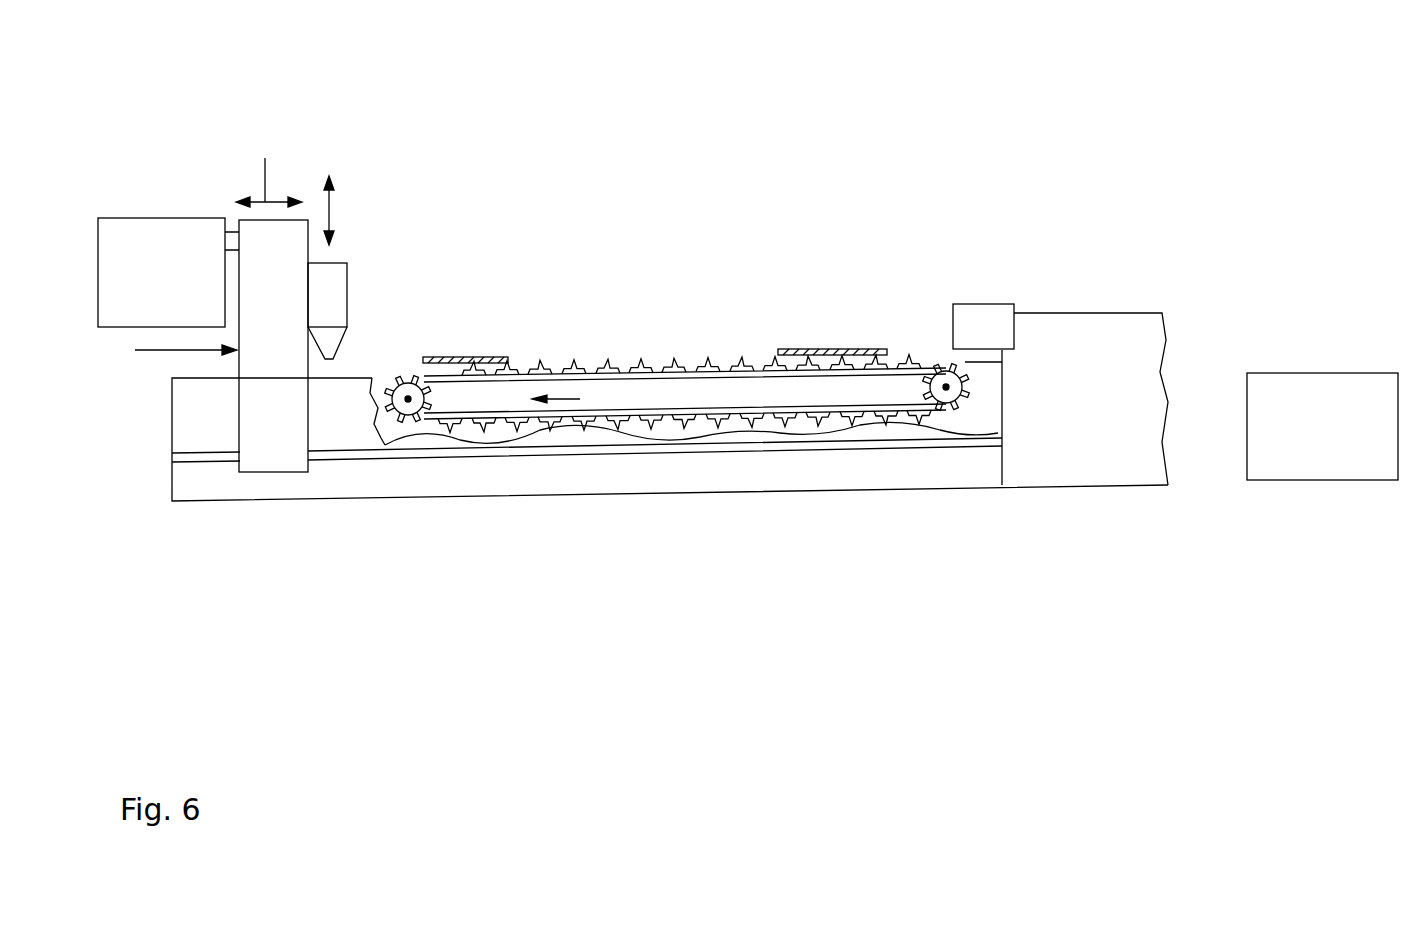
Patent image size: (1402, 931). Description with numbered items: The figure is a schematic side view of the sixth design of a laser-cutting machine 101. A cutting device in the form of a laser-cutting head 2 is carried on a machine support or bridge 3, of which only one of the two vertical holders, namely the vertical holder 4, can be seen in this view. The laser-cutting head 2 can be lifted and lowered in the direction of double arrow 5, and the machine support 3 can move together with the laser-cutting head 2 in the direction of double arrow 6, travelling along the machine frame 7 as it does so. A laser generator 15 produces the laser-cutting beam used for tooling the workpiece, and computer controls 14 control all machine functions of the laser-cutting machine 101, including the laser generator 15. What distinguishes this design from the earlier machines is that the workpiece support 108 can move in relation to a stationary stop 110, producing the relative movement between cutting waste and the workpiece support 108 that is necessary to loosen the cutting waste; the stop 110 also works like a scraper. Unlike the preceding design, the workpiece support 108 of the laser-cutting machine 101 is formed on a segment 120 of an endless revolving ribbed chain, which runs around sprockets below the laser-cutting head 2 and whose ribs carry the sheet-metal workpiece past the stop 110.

The laser-cutting machine 101 is at (176, 151).
The laser-cutting head 2 is at (317, 310).
The machine support 3 is at (171, 352).
The vertical holder 4 is at (264, 324).
The double arrow 5 is at (329, 208).
The double arrow 6 is at (269, 169).
The machine frame 7 is at (275, 485).
The computer controls 14 is at (1308, 442).
The laser generator 15 is at (145, 292).
The workpiece support 108 is at (731, 340).
The stop 110 is at (993, 318).
The segment 120 is at (622, 367).